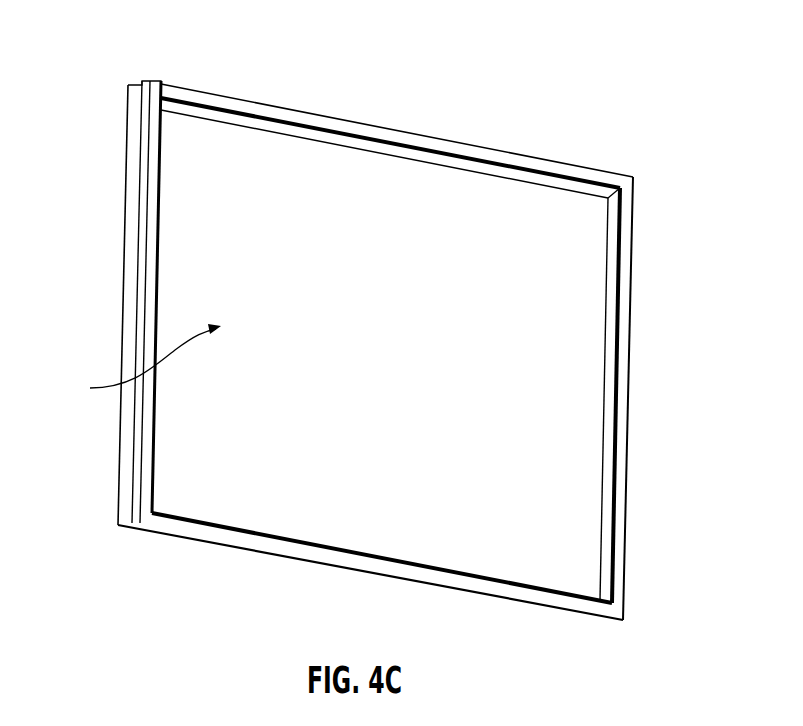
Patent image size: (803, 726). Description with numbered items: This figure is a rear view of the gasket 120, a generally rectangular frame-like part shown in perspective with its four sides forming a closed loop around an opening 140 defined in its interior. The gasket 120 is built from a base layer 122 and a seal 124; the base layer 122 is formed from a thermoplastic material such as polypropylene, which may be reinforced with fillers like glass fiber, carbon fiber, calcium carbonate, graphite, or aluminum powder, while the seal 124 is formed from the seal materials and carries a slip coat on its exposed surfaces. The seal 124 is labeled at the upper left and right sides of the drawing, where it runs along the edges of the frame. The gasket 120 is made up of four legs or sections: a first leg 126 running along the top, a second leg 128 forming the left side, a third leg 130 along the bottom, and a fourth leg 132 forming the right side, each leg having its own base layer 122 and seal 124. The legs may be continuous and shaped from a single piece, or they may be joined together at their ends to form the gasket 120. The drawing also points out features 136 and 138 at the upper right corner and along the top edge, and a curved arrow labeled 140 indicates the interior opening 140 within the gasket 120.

The gasket 120 is at (106, 41).
The base layer 122 is at (535, 165).
The seal 124 is at (134, 120).
The first leg 126 is at (415, 135).
The second leg 128 is at (147, 303).
The third leg 130 is at (370, 565).
The fourth leg 132 is at (632, 383).
The upper right corner 136 is at (627, 211).
The top bezel band 138 is at (328, 130).
The opening 140 is at (134, 365).